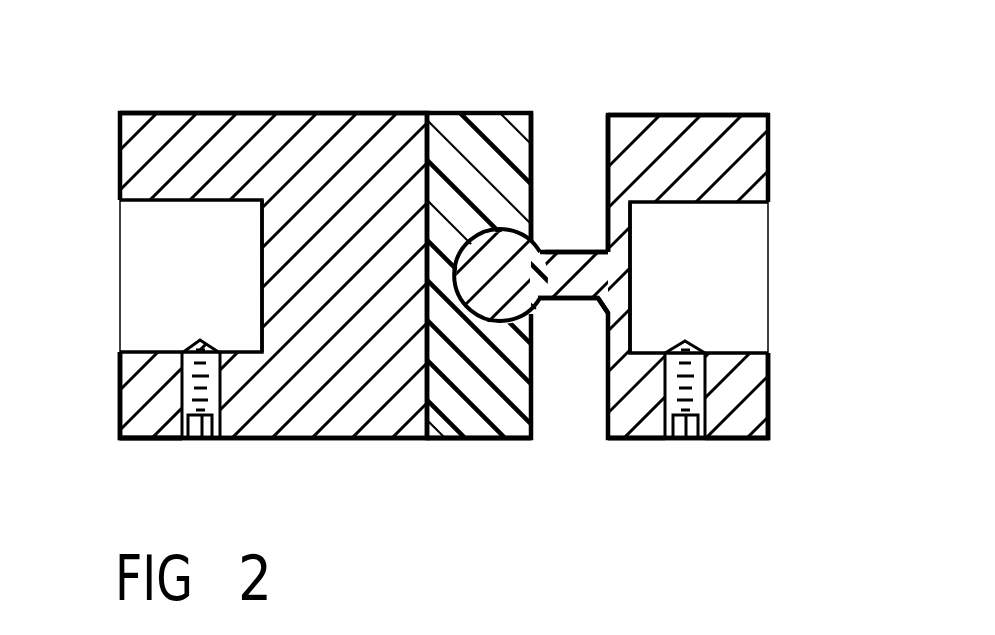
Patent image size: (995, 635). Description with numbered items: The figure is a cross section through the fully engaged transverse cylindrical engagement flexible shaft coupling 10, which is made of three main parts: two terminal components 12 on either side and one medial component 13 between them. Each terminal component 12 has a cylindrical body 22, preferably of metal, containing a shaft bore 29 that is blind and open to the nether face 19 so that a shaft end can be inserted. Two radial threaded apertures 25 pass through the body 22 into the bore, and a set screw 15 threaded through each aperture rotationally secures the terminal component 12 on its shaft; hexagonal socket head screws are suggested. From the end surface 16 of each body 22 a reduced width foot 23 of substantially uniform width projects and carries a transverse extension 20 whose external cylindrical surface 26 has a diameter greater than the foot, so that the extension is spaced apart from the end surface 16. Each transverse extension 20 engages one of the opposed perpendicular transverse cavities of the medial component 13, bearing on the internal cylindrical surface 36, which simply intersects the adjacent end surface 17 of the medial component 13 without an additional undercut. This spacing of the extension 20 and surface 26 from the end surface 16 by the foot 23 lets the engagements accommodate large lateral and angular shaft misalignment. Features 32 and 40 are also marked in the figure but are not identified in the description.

The transverse cylindrical engagement flexible shaft coupling 10 is at (522, 535).
The terminal component 12 is at (300, 85).
The medial component 13 is at (448, 90).
The set screw 15 is at (203, 438).
The end surface 16 is at (548, 116).
The end surface 17 is at (592, 115).
The nether face 19 is at (120, 226).
The transverse extension 20 is at (540, 318).
The body 22 is at (135, 395).
The reduced width foot 23 is at (563, 267).
The radial threaded aperture 25 is at (145, 427).
The external cylindrical surface 26 is at (543, 245).
The shaft bore 29 is at (147, 298).
The bottom surface of seal member 32 is at (477, 440).
The internal cylindrical surface 36 is at (500, 330).
The top surface 40 is at (203, 112).